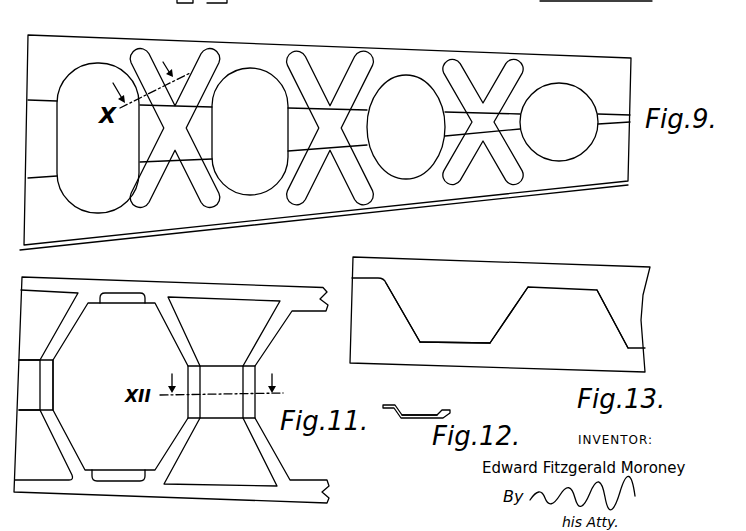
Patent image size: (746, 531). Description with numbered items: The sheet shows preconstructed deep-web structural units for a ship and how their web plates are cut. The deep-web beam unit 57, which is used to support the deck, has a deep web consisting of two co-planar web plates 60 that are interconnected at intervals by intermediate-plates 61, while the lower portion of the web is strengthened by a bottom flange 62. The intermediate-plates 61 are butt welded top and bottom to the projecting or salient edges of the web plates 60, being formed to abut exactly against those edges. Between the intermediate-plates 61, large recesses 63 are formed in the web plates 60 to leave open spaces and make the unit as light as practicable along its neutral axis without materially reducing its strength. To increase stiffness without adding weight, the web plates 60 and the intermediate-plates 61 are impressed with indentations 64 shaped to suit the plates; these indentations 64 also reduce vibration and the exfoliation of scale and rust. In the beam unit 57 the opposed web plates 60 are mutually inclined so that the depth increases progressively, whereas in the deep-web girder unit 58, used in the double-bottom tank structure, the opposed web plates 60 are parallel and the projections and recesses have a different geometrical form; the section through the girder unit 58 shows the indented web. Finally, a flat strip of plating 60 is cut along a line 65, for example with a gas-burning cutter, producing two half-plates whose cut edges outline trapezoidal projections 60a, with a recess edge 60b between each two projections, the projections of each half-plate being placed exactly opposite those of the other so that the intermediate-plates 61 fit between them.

In FIG. 9, the deep-web beam unit 57 is at (552, 193).
In FIG. 11, the deep-web girder unit 58 is at (190, 283).
In FIG. 9, the web plates 60 is at (167, 13).
In FIG. 11, the web plates 60 is at (152, 298).
In FIG. 12, the web plates 60 is at (386, 404).
In FIG. 13, the web plates 60 is at (374, 271).
In FIG. 13, the trapezoidal projections 60a is at (524, 319).
In FIG. 13, the recess edge 60b is at (425, 339).
In FIG. 9, the intermediate-plates 61 is at (297, 127).
In FIG. 11, the intermediate-plates 61 is at (193, 405).
In FIG. 9, the bottom flange 62 is at (290, 223).
In FIG. 9, the recesses 63 is at (402, 175).
In FIG. 11, the recesses 63 is at (67, 450).
In FIG. 9, the indentations 64 is at (148, 178).
In FIG. 11, the indentations 64 is at (108, 300).
In FIG. 12, the indentations 64 is at (407, 418).
In FIG. 13, the cutting line 65 is at (398, 300).